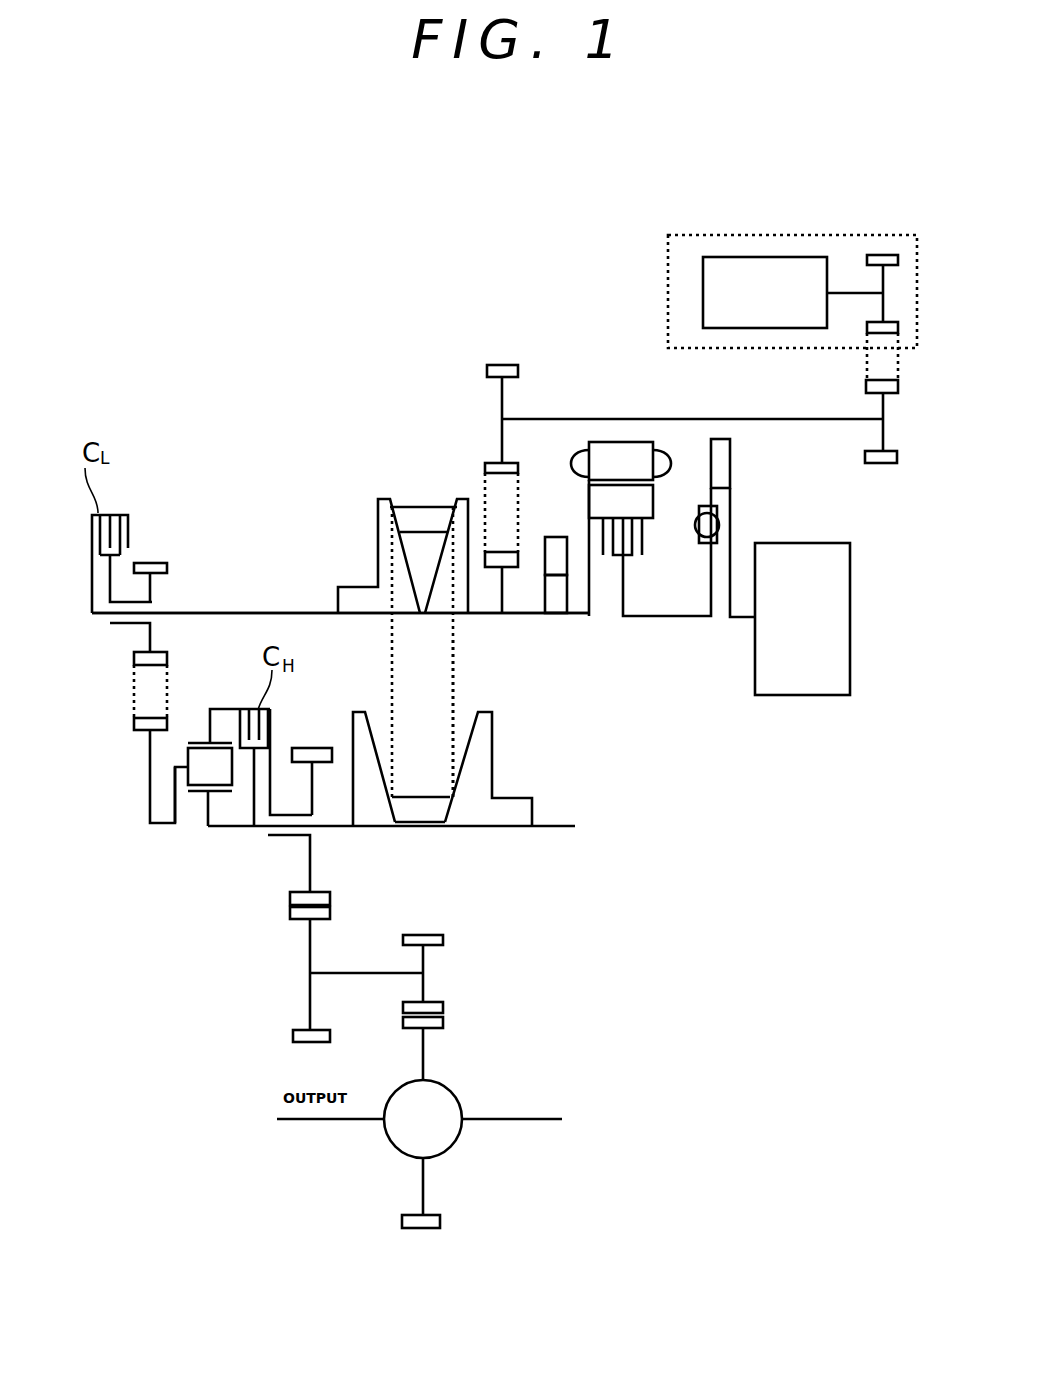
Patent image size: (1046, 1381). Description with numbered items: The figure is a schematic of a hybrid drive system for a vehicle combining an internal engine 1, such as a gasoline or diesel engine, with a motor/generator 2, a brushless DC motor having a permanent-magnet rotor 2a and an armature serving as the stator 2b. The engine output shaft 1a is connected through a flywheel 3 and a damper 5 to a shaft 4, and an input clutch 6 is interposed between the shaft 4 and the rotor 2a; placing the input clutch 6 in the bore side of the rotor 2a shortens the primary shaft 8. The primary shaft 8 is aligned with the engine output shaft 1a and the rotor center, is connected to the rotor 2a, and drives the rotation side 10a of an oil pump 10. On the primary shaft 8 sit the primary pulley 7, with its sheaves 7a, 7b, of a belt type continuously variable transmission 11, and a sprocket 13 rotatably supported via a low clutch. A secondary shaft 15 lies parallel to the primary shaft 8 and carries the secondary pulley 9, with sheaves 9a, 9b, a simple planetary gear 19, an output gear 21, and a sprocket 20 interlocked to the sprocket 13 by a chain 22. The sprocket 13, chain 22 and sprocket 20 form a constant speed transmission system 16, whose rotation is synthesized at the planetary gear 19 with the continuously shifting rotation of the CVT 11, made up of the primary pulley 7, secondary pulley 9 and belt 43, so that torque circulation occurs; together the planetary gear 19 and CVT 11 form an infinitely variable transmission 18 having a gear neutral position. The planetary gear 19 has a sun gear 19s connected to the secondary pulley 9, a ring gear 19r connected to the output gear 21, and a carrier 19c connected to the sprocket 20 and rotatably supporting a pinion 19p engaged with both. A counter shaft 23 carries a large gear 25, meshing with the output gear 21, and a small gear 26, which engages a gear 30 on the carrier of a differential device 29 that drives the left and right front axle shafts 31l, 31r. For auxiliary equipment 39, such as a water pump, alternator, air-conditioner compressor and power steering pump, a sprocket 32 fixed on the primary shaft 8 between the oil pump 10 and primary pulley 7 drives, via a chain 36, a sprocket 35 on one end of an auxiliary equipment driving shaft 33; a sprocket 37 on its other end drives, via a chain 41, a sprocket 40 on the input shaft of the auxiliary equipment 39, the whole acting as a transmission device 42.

The internal engine 1 is at (813, 542).
The engine output shaft 1a is at (742, 618).
The motor/generator 2 is at (644, 480).
The rotor 2a is at (653, 503).
The stator 2b is at (612, 442).
The flywheel 3 is at (732, 450).
The shaft 4 is at (667, 618).
The damper 5 is at (720, 525).
The input clutch 6 is at (642, 543).
The primary pulley 7 is at (381, 517).
The primary pulley sheave 7a is at (462, 497).
The primary pulley sheave 7b is at (388, 521).
The primary shaft 8 is at (297, 612).
The secondary pulley 9 is at (457, 728).
The secondary pulley sheave 9a is at (362, 712).
The secondary pulley sheave 9b is at (484, 737).
The oil pump 10 is at (550, 533).
The rotation side of oil pump 10a is at (584, 604).
The belt type continuously variable transmission 11 is at (379, 442).
The sprocket 13 is at (157, 563).
The secondary shaft 15 is at (548, 828).
The constant speed transmission system 16 is at (126, 723).
The infinitely variable transmission 18 is at (230, 463).
The planetary gear 19 is at (216, 753).
The carrier 19c is at (175, 791).
The pinion 19p is at (180, 762).
The ring gear 19r is at (200, 742).
The sun gear 19s is at (210, 797).
The sprocket 20 is at (148, 815).
The output gear 21 is at (318, 748).
The chain 22 is at (132, 700).
The counter shaft 23 is at (363, 972).
The large gear 25 is at (293, 1035).
The small gear 26 is at (432, 935).
The differential device 29 is at (455, 1095).
The gear 30 is at (445, 1020).
The front axle shaft 31l is at (303, 1120).
The front axle shaft 31r is at (523, 1120).
The sprocket 32 is at (512, 575).
The auxiliary equipment driving shaft 33 is at (547, 418).
The sprocket 35 is at (487, 370).
The chain 36 is at (483, 488).
The sprocket 37 is at (863, 385).
The auxiliary equipment 39 is at (804, 210).
The sprocket 40 is at (883, 255).
The chain 41 is at (865, 366).
The transmission device 42 is at (895, 431).
The belt 43 is at (458, 680).